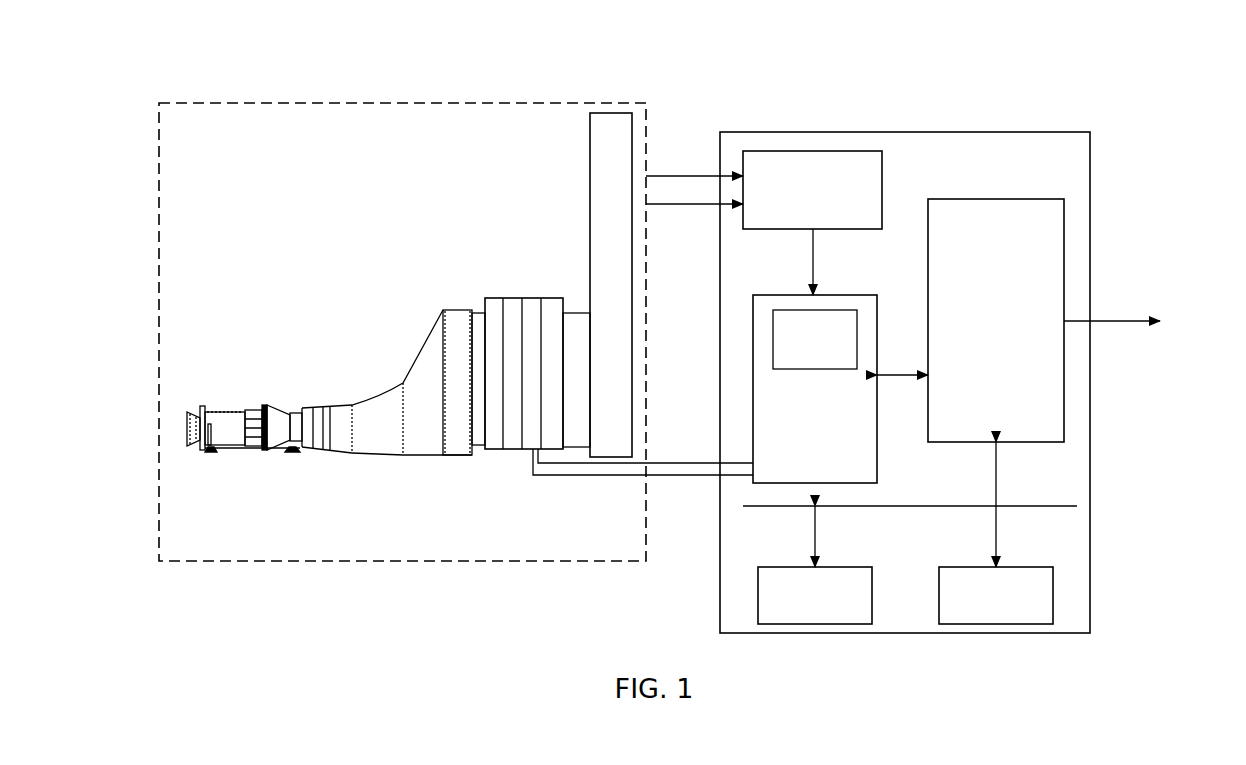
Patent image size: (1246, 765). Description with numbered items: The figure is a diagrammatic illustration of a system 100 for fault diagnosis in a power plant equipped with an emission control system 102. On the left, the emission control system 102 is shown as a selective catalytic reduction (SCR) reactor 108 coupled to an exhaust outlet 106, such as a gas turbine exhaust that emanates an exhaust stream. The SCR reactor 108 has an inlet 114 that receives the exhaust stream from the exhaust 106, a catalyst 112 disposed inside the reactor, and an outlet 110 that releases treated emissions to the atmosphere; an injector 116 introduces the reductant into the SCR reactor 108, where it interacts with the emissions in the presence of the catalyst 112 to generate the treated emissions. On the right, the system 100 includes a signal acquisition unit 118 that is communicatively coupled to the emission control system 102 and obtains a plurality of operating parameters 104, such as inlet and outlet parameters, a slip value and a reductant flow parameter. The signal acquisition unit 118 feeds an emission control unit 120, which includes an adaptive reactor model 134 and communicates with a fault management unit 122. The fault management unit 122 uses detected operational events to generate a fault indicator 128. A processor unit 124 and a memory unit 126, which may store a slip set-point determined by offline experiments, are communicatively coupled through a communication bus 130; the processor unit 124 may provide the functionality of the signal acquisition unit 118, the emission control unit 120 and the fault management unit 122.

The system 100 is at (1113, 48).
The emission control system 102 is at (402, 103).
The operating parameters 104 is at (661, 203).
The exhaust outlet 106 is at (208, 406).
The SCR reactor 108 is at (445, 310).
The outlet 110 is at (590, 172).
The catalyst 112 is at (514, 298).
The inlet 114 is at (320, 412).
The injector 116 is at (531, 472).
The signal acquisition unit 118 is at (882, 170).
The emission control unit 120 is at (855, 295).
The fault management unit 122 is at (1022, 199).
The processor unit 124 is at (852, 567).
The memory unit 126 is at (1035, 567).
The fault indicator 128 is at (1126, 321).
The communication bus 130 is at (998, 485).
The adaptive reactor model 134 is at (857, 339).